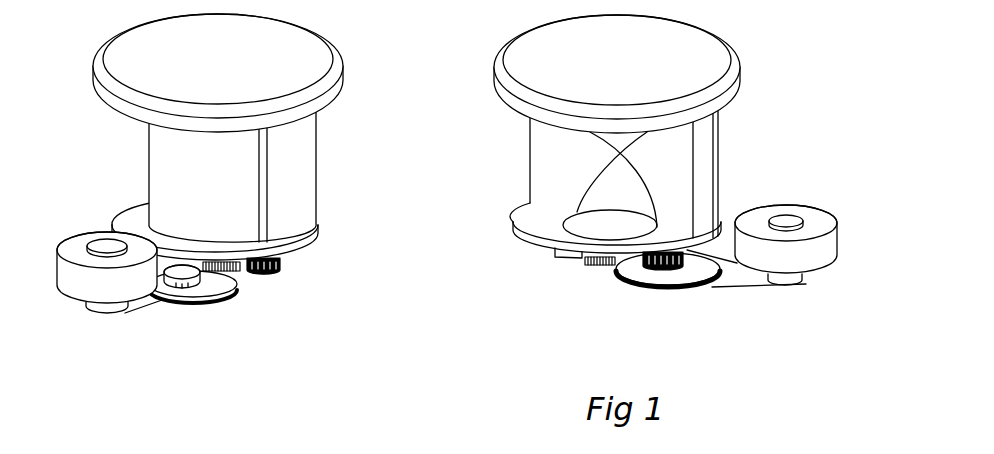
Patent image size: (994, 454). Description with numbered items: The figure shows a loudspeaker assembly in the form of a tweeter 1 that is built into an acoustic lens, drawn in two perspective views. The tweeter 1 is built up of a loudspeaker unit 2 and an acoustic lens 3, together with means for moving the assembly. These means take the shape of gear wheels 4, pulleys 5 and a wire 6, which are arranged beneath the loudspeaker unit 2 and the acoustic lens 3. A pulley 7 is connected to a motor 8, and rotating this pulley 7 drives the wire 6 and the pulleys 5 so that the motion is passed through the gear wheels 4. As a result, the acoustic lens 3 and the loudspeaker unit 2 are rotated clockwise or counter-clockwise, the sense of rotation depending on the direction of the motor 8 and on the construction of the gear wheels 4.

The tweeter 1 is at (749, 133).
The loudspeaker unit 2 is at (607, 225).
The acoustic lens 3 is at (677, 197).
The gear wheels 4 is at (667, 258).
The pulleys 5 is at (687, 271).
The wire 6 is at (750, 287).
The pulley 7 is at (807, 280).
The motor 8 is at (813, 263).